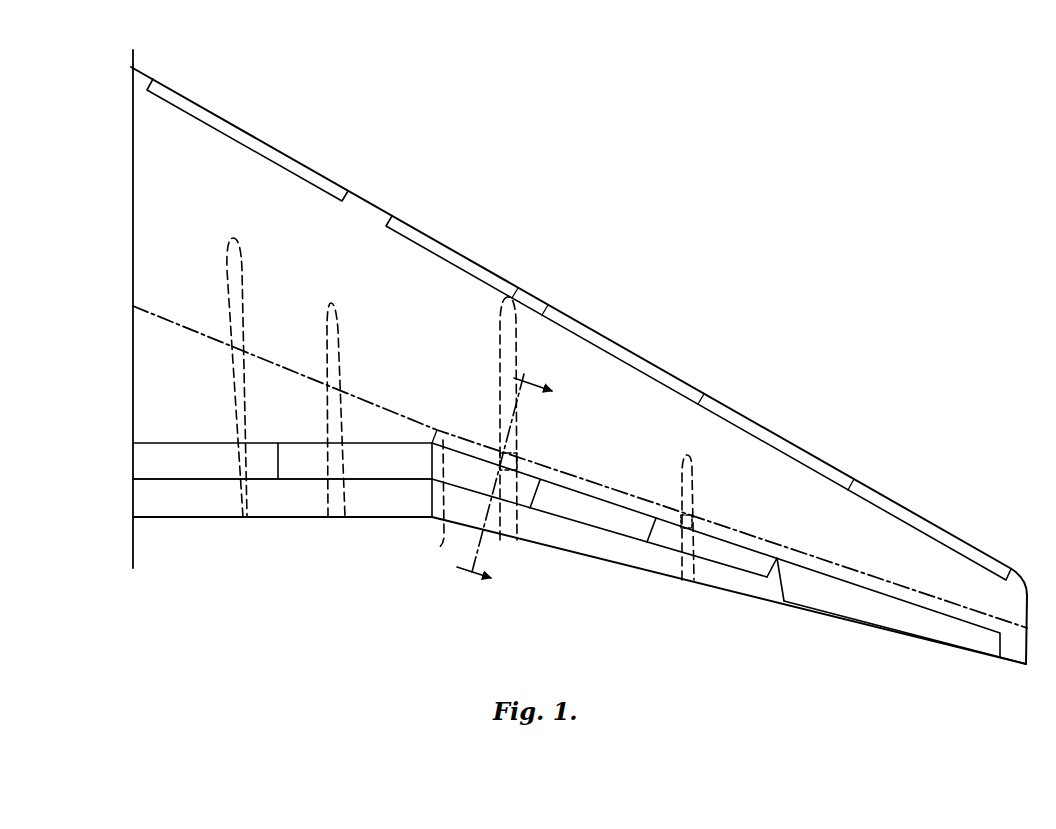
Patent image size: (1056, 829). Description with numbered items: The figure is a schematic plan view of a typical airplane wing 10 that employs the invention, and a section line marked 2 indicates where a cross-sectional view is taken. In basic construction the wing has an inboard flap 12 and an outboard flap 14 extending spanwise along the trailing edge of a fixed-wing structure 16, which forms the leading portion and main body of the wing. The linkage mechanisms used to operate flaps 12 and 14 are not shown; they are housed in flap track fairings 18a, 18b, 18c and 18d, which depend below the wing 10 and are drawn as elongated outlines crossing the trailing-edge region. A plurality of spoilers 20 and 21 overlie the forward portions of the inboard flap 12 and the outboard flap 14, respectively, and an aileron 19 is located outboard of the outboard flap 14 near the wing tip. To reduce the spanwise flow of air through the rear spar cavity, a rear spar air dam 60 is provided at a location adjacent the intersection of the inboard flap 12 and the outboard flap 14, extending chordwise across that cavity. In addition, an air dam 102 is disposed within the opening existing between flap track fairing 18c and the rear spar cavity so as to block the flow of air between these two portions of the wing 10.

The airplane wing 10 is at (662, 324).
The inboard flap 12 is at (373, 502).
The outboard flap 14 is at (582, 537).
The fixed-wing structure 16 is at (653, 415).
The flap track fairing 18a is at (227, 246).
The flap track fairing 18b is at (325, 492).
The flap track fairing 18c is at (518, 281).
The flap track fairing 18d is at (697, 457).
The aileron 19 is at (933, 628).
The spoilers 20 is at (168, 502).
The spoilers 21 is at (525, 493).
The rear spar air dam 60 is at (440, 508).
The air dam 102 is at (500, 456).
The section line 2- 2 is at (506, 481).